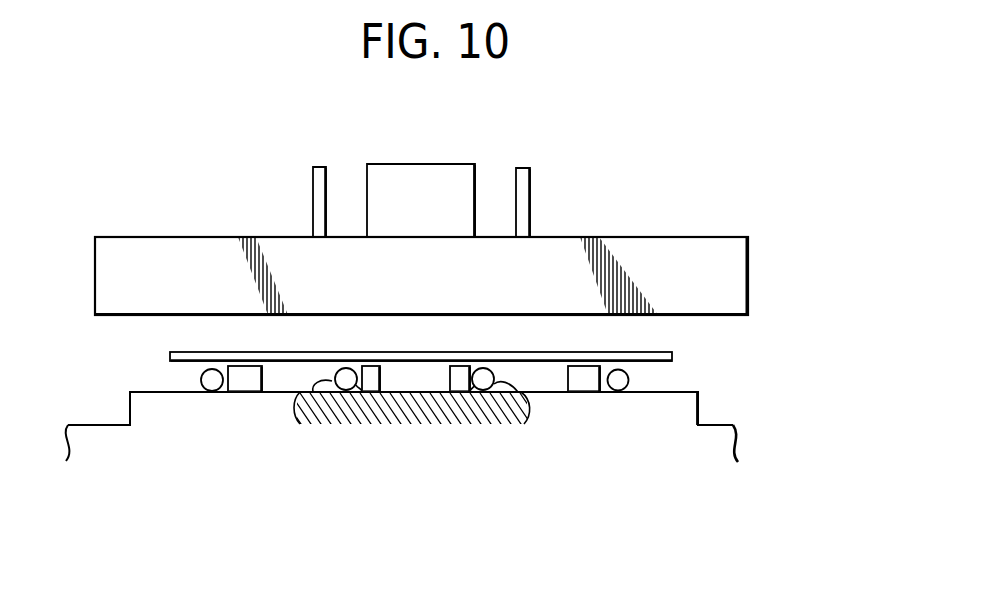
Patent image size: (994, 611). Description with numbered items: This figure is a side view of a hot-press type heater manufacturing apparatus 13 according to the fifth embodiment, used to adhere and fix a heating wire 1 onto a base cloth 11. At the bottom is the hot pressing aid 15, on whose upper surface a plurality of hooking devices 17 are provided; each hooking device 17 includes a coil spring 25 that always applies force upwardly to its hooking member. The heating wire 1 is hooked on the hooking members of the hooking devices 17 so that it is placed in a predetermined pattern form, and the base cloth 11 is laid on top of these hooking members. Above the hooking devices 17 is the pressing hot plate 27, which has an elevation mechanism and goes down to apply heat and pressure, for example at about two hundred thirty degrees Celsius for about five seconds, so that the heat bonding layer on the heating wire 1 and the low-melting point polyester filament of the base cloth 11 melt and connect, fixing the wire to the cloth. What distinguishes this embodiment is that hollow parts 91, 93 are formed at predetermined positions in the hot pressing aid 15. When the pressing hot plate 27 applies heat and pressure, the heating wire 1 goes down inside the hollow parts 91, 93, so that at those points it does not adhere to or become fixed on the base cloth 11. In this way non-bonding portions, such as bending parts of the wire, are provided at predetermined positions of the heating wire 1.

The heating wire 1 is at (200, 377).
The base cloth 11 is at (675, 357).
The hot-press type heater manufacturing apparatus 13 is at (432, 223).
The hot pressing aid 15 is at (683, 402).
The hooking device 17 is at (238, 388).
The coil spring 25 is at (253, 387).
The pressing hot plate 27 is at (742, 238).
The hollow part 91 is at (517, 393).
The hollow part 93 is at (313, 393).